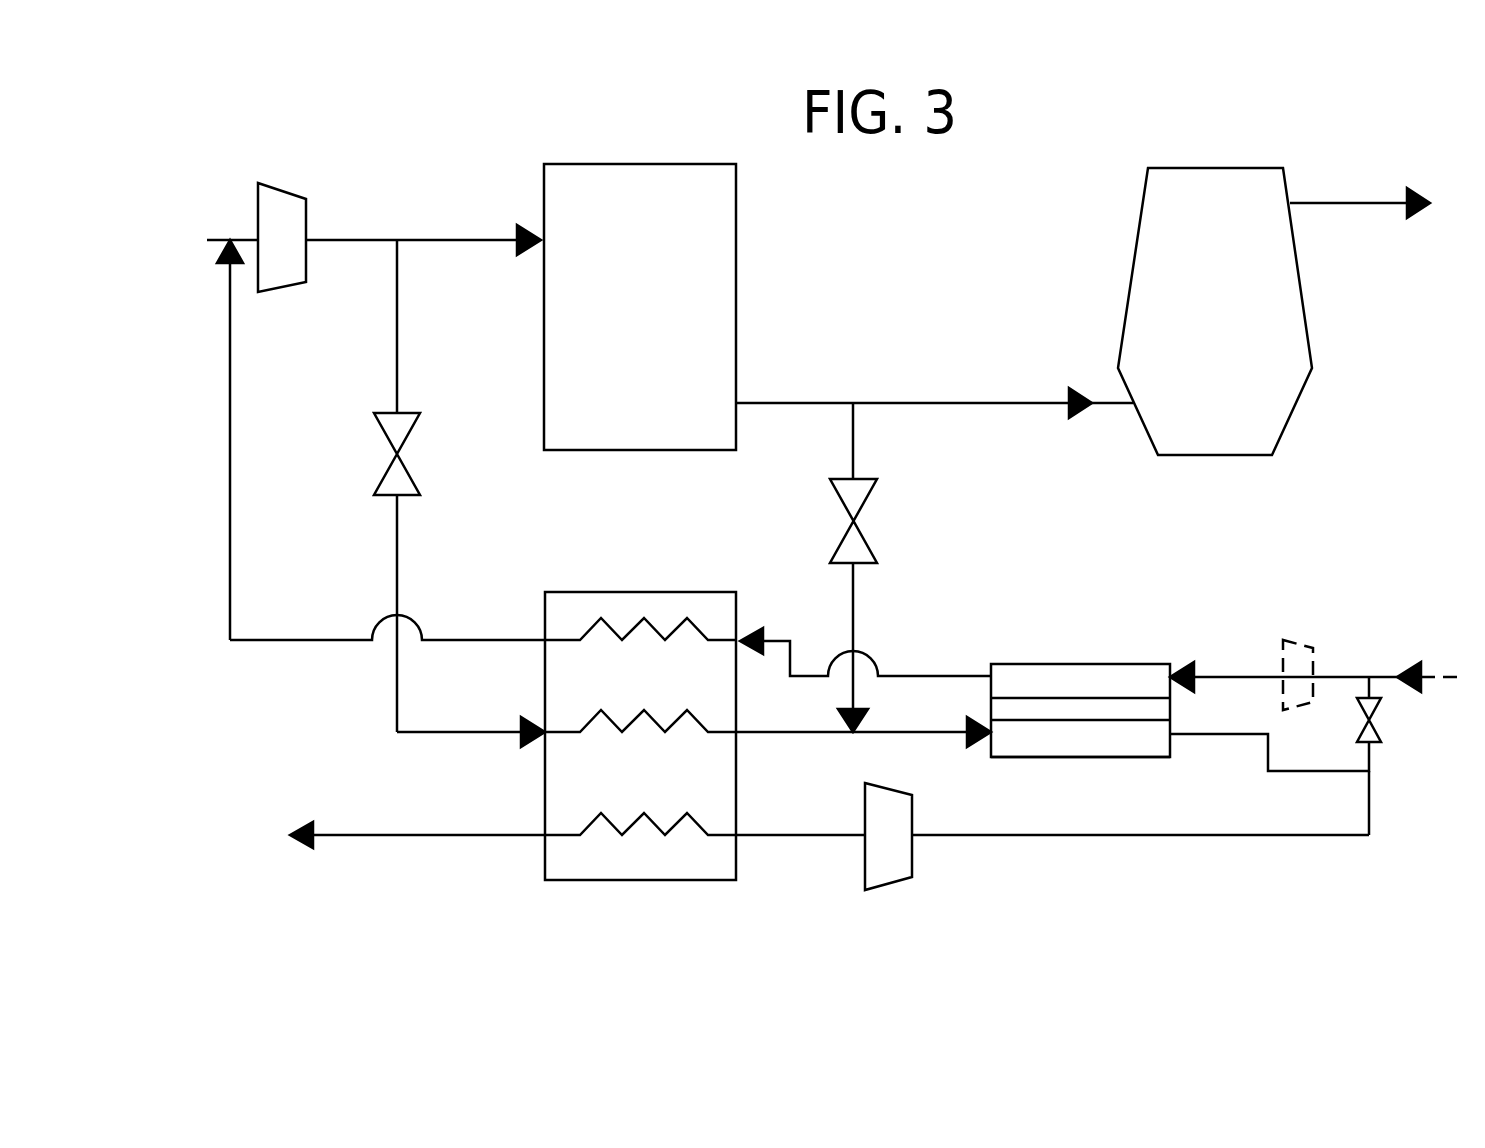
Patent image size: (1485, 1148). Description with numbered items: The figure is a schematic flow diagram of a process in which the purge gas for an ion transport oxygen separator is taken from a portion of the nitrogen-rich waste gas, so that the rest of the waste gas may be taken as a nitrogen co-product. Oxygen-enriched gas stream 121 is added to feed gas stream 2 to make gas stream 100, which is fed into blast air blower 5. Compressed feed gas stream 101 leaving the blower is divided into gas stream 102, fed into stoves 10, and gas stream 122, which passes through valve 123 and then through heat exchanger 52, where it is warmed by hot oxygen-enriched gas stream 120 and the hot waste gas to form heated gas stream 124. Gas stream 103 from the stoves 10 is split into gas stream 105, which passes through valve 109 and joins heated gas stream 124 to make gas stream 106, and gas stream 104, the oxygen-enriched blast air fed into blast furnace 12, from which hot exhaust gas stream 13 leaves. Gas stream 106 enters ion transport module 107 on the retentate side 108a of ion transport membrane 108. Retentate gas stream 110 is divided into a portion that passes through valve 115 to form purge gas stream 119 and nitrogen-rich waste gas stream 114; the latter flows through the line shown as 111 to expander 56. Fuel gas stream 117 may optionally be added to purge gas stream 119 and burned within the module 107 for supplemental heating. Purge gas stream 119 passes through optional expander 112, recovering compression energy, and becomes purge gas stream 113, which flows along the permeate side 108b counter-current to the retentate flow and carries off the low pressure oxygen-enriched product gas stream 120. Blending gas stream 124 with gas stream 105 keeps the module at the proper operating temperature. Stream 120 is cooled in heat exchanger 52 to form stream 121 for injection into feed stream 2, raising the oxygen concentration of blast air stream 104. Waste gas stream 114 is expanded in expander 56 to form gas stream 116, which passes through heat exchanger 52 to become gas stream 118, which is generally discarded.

The feed gas stream 2 is at (215, 243).
The blast air blower 5 is at (285, 183).
The stoves 10 is at (736, 203).
The blast furnace 12 is at (1140, 200).
The hot exhaust gas stream 13 is at (1347, 203).
The heat exchanger 52 is at (637, 592).
The expander 56 is at (903, 878).
The gas stream 100 is at (235, 238).
The compressed feed gas stream 101 is at (333, 238).
The gas stream 102 is at (462, 243).
The gas stream 103 is at (812, 403).
The gas stream 104 is at (990, 403).
The gas stream 105 is at (853, 452).
The gas stream 106 is at (932, 733).
The ion transport module 107 is at (1140, 757).
The ion transport membrane 108 is at (1152, 714).
The retentate side 108a is at (1024, 723).
The permeate side 108b is at (1107, 697).
The valve 109 is at (868, 540).
The retentate gas stream 110 is at (1335, 771).
The line to turbine 111 is at (1372, 760).
The expander 112 is at (1318, 670).
The purge gas stream 113 is at (1233, 677).
The nitrogen-rich waste gas stream 114 is at (1075, 836).
The valve 115 is at (1380, 718).
The gas stream 116 is at (805, 836).
The fuel gas stream 117 is at (1437, 672).
The gas stream 118 is at (410, 835).
The purge gas stream 119 is at (1355, 677).
The oxygen-enriched product gas stream 120 is at (930, 676).
The oxygen-enriched gas stream 121 is at (485, 640).
The gas stream 122 is at (397, 345).
The valve 123 is at (383, 438).
The heated gas stream 124 is at (810, 733).